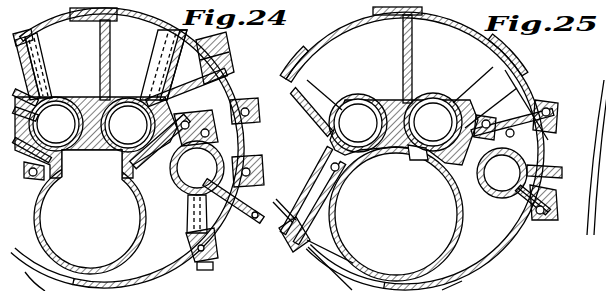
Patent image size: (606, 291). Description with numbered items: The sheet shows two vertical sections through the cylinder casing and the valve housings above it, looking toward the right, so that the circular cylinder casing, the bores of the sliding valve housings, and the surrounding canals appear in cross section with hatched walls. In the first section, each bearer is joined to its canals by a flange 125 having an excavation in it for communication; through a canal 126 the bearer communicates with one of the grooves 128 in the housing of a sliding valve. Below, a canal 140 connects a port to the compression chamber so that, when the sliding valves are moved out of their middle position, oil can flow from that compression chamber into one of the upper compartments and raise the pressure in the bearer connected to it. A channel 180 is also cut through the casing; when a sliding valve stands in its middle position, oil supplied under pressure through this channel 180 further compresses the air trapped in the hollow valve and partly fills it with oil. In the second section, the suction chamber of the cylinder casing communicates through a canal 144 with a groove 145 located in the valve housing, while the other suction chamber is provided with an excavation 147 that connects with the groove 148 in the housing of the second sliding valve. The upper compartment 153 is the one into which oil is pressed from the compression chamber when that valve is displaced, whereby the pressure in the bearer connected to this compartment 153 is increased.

In FIG. 24, the flange 125 is at (225, 50).
In FIG. 24, the canal 126 is at (48, 78).
In FIG. 24, the groove 128 is at (115, 93).
In FIG. 24, the channel 180 is at (38, 51).
In FIG. 24, the canal 140 is at (98, 158).
In FIG. 25, the groove 145 is at (353, 102).
In FIG. 25, the upper compartment 153 is at (492, 87).
In FIG. 25, the canal 144 is at (330, 154).
In FIG. 25, the groove 148 is at (400, 155).
In FIG. 25, the excavation 147 is at (423, 160).